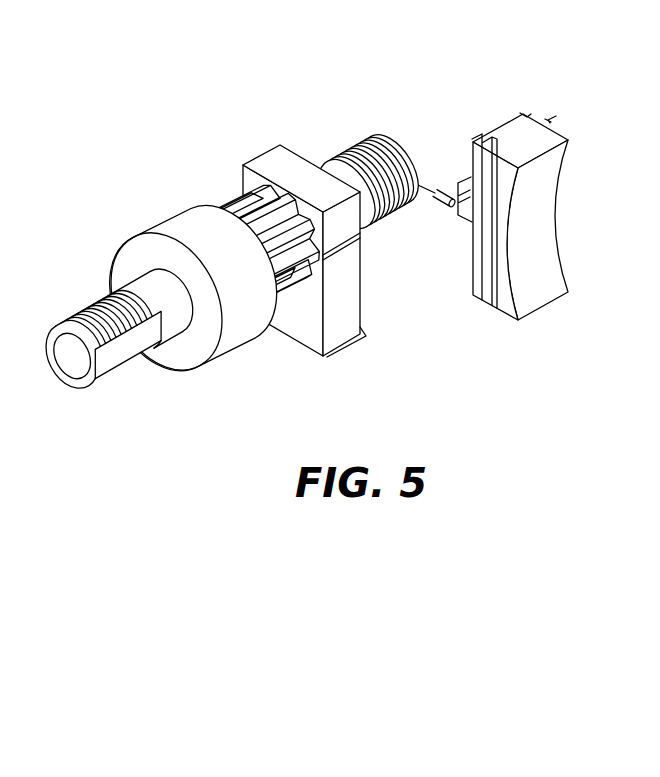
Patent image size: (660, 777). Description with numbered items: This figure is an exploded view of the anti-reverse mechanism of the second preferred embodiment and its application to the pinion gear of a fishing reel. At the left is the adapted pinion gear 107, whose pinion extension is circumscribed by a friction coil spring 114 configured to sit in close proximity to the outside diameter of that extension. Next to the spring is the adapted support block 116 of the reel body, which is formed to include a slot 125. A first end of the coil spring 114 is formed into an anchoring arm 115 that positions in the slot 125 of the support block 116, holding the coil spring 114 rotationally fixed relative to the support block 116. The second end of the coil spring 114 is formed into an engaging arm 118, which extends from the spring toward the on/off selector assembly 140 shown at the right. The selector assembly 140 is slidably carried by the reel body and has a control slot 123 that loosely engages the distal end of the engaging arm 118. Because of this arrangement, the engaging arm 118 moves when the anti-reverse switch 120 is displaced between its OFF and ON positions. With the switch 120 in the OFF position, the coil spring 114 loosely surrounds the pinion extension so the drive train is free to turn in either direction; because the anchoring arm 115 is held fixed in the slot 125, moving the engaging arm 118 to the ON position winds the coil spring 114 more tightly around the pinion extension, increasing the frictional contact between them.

The pinion gear 107 is at (178, 227).
The coil spring 114 is at (353, 148).
The anchoring arm 115 is at (352, 262).
The support block 116 is at (273, 163).
The engaging arm 118 is at (432, 200).
The anti-reverse switch 120 is at (542, 287).
The control slot 123 is at (466, 214).
The slot 125 is at (347, 253).
The on/off selector assembly 140 is at (453, 167).